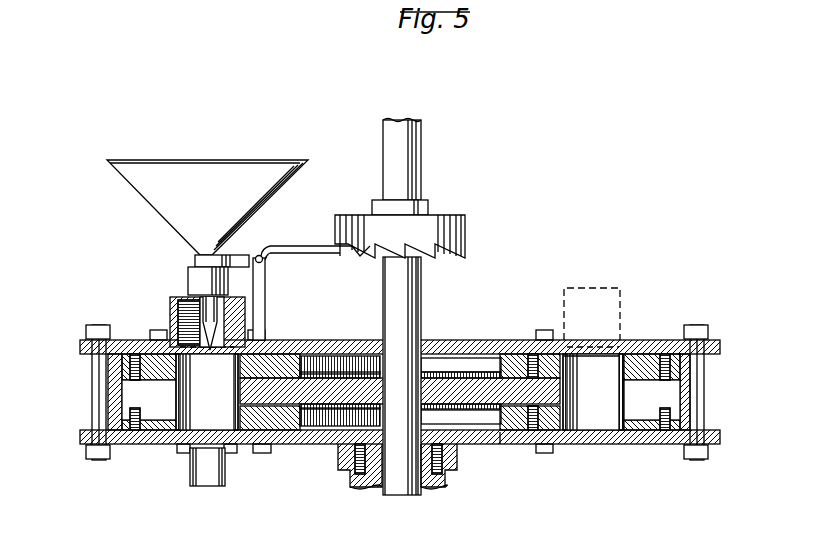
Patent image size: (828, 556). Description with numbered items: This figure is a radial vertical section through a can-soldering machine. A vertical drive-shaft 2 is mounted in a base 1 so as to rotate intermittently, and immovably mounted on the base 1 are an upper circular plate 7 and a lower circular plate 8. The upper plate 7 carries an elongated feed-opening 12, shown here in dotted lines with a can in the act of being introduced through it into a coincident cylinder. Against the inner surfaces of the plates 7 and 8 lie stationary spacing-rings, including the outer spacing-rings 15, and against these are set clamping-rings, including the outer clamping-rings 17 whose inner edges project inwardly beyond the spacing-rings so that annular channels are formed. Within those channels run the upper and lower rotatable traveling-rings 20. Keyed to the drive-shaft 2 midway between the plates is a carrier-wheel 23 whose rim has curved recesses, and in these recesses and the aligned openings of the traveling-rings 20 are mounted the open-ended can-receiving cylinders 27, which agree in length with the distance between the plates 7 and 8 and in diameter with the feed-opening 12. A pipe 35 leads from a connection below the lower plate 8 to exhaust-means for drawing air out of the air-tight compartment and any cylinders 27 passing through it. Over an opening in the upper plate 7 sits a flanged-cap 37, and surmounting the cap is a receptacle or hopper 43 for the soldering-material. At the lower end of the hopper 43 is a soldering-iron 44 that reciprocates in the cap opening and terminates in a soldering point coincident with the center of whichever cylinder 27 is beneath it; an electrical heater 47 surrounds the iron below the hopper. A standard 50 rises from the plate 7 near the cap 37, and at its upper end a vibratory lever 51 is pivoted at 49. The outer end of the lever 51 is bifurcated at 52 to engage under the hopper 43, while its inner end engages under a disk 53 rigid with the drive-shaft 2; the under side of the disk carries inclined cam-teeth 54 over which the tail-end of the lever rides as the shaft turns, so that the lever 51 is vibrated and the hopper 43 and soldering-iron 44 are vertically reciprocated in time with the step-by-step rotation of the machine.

The base 1 is at (430, 488).
The drive-shaft 2 is at (422, 178).
The upper circular plate 7 is at (455, 341).
The lower circular plate 8 is at (492, 446).
The feed-opening 12 is at (616, 340).
The outer stationary spacing-ring 15 is at (96, 356).
The outer clamping-ring 17 is at (156, 370).
The rotatable traveling-ring 20 is at (266, 347).
The carrier-wheel 23 is at (504, 440).
The can-receiving cylinder 27 is at (399, 388).
The pipe 35 is at (210, 490).
The flanged-cap 37 is at (172, 313).
The receptacle or hopper 43 is at (184, 162).
The soldering-iron 44 is at (214, 322).
The electrical heater 47 is at (188, 285).
The pivot 49 is at (261, 255).
The standard 50 is at (282, 299).
The vibratory lever 51 is at (313, 245).
The bifurcated end 52 is at (195, 259).
The disk 53 is at (465, 242).
The inclined cam-teeth 54 is at (358, 260).